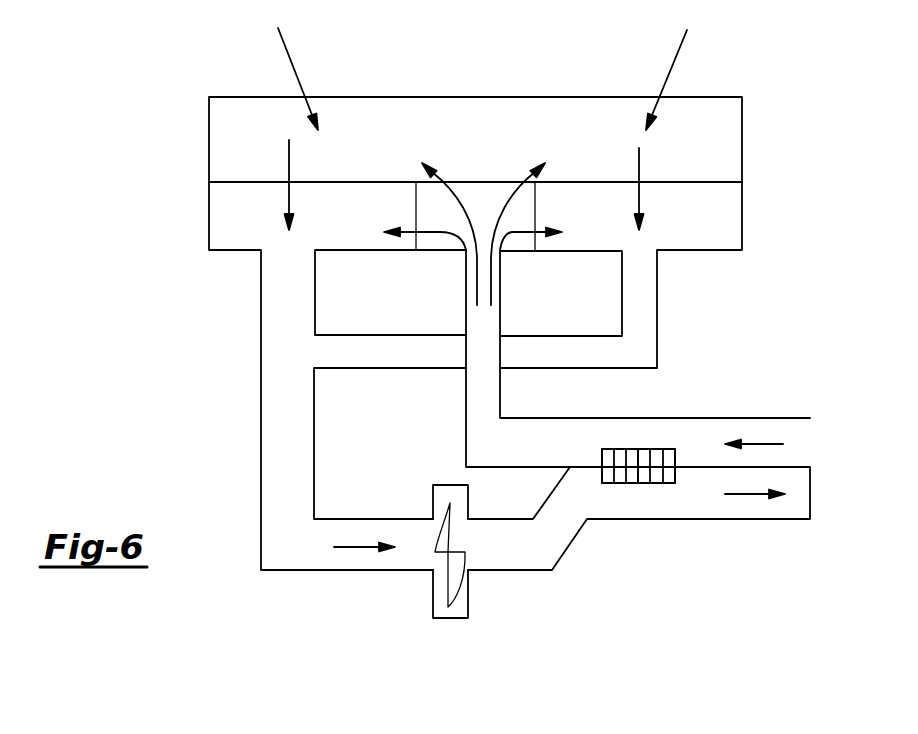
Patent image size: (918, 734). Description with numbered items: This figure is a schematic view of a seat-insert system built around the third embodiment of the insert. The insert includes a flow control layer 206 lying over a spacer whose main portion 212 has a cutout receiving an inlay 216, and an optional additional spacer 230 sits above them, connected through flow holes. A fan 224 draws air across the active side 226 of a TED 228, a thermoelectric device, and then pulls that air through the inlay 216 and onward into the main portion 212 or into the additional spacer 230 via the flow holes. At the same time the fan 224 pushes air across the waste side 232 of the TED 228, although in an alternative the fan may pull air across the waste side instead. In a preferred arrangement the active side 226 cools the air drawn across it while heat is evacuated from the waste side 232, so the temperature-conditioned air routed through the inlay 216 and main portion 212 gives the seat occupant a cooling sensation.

The flow control layer 206 is at (208, 182).
The main portion 212 is at (220, 227).
The inlay 216 is at (428, 245).
The fan 224 is at (436, 614).
The active side 226 is at (657, 449).
The TED 228 is at (657, 484).
The additional spacer 230 is at (583, 117).
The waste side 232 is at (618, 484).